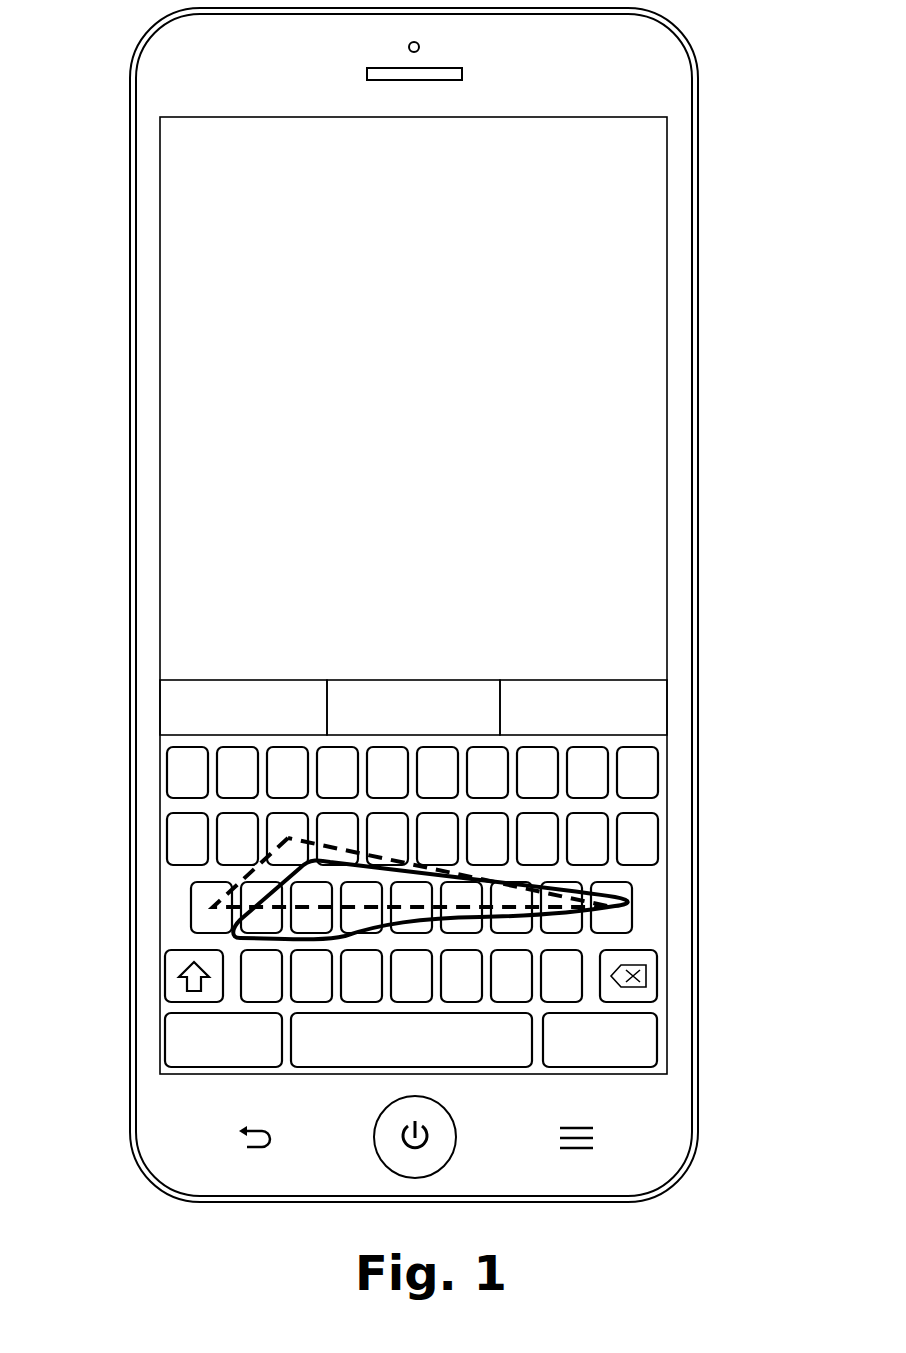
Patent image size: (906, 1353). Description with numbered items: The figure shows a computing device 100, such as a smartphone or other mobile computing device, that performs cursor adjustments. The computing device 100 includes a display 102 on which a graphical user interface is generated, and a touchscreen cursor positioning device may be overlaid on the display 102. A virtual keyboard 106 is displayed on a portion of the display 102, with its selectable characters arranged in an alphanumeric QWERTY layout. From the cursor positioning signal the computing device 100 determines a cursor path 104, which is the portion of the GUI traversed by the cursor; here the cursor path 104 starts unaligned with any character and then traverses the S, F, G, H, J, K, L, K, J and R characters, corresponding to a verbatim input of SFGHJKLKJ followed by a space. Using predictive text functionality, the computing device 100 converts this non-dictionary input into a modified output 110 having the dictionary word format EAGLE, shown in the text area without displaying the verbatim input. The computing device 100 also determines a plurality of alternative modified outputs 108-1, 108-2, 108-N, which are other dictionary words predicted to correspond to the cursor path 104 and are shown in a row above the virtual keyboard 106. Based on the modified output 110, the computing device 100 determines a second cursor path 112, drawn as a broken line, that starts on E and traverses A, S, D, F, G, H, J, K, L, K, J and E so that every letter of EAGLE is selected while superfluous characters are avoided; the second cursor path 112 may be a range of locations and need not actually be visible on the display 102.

The computing device 100 is at (137, 60).
The display 102 is at (158, 378).
The cursor path 104 is at (618, 892).
The virtual keyboard 106 is at (158, 942).
The alternative modified output 108-1 is at (208, 680).
The alternative modified output 108-2 is at (352, 680).
The alternative modified output 108-N is at (616, 680).
The modified output 110 is at (190, 168).
The second cursor path 112 is at (258, 873).